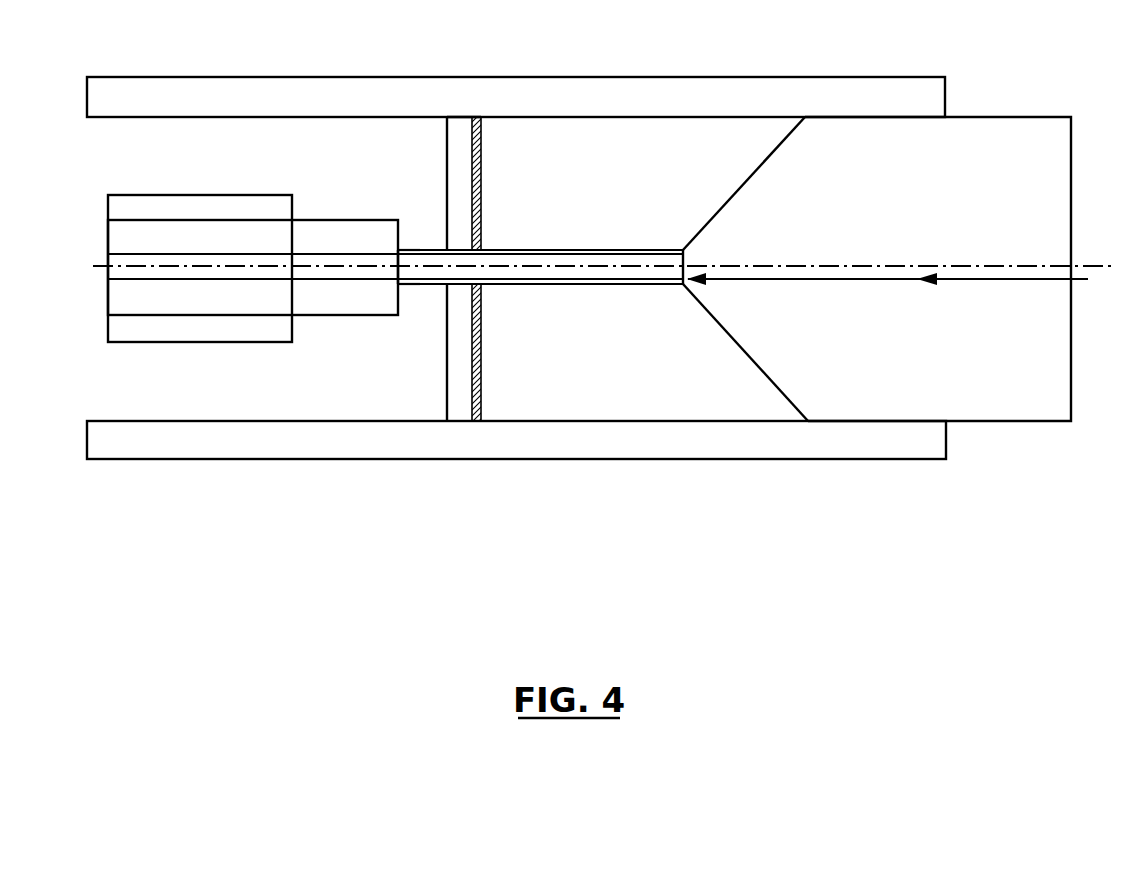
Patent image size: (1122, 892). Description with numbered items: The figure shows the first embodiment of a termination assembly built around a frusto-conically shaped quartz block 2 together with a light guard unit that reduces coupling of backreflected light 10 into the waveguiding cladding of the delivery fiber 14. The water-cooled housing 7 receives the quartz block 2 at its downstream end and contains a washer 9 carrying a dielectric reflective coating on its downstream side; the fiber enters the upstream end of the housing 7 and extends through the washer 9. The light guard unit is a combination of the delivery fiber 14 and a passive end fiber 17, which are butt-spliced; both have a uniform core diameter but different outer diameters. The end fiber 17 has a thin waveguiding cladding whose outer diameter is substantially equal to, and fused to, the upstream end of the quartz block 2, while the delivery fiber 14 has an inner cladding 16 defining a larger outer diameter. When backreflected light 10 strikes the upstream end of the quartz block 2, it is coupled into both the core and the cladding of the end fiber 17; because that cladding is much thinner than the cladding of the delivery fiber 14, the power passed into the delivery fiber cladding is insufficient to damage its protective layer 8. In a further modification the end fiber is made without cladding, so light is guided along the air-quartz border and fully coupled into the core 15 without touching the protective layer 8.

The quartz block 2 is at (843, 398).
The water-cooled housing 7 is at (895, 437).
The protective layer 8 is at (187, 322).
The washer 9 is at (455, 343).
The backreflected light 10 is at (1030, 283).
The delivery fiber 14 is at (397, 257).
The core 15 is at (186, 262).
The inner cladding 16 is at (257, 237).
The passive end fiber 17 is at (598, 265).